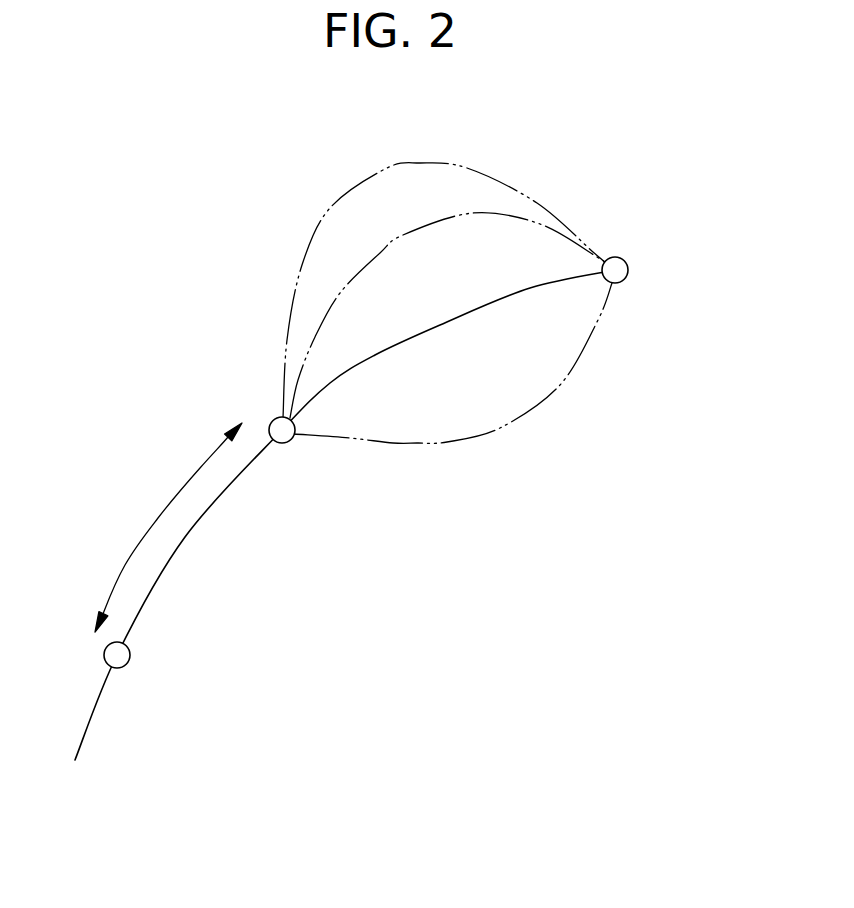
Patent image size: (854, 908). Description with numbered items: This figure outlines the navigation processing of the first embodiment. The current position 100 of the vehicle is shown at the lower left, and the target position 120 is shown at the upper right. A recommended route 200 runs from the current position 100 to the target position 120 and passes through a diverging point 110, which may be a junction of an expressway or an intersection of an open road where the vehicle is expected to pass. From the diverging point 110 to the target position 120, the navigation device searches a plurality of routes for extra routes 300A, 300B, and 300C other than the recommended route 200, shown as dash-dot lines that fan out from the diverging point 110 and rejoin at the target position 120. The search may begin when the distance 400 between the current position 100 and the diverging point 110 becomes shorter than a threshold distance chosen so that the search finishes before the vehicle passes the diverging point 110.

The current position 100 is at (128, 657).
The diverging point 110 is at (292, 442).
The target position 120 is at (628, 263).
The recommended route 200 is at (375, 355).
The extra route 300A is at (417, 443).
The extra route 300B is at (337, 303).
The extra route 300C is at (303, 262).
The distance 400 is at (158, 520).